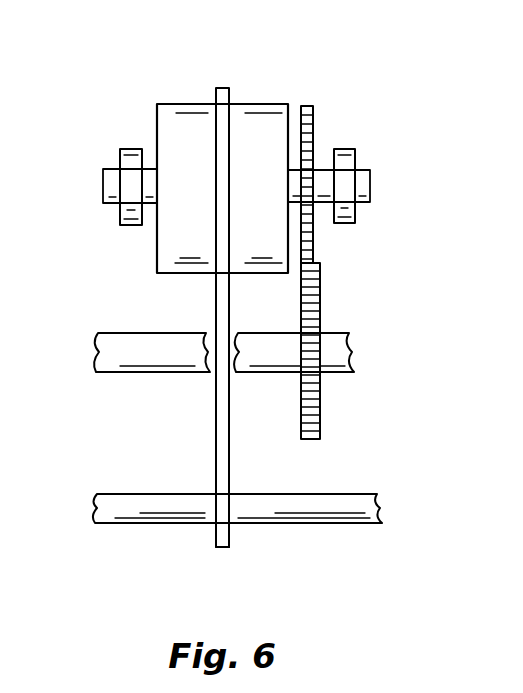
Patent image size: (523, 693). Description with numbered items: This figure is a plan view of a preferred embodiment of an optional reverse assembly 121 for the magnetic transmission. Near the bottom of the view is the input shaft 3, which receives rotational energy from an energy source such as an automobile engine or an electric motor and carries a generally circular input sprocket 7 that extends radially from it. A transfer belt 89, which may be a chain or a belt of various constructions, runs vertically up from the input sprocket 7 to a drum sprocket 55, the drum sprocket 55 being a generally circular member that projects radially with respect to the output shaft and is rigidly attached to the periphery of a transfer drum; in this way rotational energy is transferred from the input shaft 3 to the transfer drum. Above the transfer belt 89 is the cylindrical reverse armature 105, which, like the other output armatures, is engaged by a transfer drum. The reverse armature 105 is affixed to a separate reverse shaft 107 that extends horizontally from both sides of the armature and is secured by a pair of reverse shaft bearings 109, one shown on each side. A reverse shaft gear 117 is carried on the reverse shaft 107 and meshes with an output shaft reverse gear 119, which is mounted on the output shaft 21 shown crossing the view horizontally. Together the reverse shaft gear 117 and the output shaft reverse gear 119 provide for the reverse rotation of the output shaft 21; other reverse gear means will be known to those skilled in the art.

The input shaft 3 is at (128, 523).
The input sprocket 7 is at (230, 529).
The output shaft 21 is at (335, 338).
The drum sprocket 55 is at (217, 133).
The transfer belt 89 is at (215, 413).
The reverse armature 105 is at (157, 128).
The reverse shaft 107 is at (366, 170).
The reverse shaft bearings 109 is at (122, 223).
The reverse shaft gear 117 is at (313, 106).
The output shaft reverse gear 119 is at (322, 412).
The reverse assembly 121 is at (157, 260).